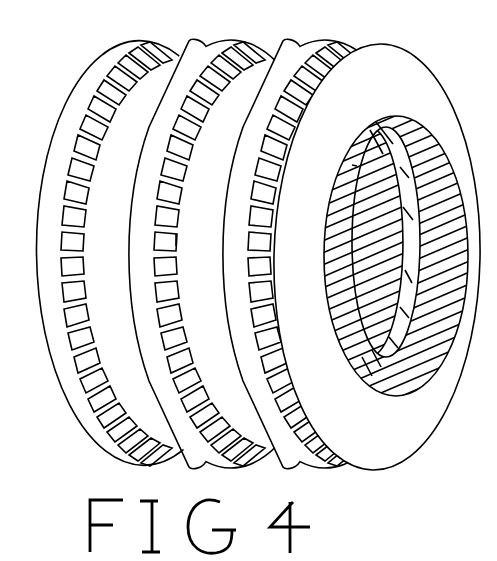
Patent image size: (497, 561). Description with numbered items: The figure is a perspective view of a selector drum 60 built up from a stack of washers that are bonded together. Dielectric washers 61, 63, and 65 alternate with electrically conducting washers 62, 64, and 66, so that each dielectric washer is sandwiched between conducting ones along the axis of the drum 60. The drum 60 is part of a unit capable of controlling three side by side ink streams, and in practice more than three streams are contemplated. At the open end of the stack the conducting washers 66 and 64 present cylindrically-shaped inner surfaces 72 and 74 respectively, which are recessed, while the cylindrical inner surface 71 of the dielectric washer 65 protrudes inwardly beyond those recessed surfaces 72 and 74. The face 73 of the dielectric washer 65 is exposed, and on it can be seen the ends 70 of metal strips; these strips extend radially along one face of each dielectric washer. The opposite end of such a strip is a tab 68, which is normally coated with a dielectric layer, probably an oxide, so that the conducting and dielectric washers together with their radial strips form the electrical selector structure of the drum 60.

The drum 60 is at (76, 101).
The dielectric washer 61 is at (136, 46).
The electrically conducting washer 62 is at (187, 47).
The dielectric washer 63 is at (233, 47).
The electrically conducting washer 64 is at (284, 49).
The dielectric washer 65 is at (331, 47).
The electrically conducting washer 66 is at (385, 56).
The tab 68 is at (249, 240).
The ends of metal strips 70 is at (372, 376).
The surface 71 is at (352, 165).
The surface 72 is at (400, 132).
The face 73 is at (370, 141).
The surface 74 is at (325, 246).